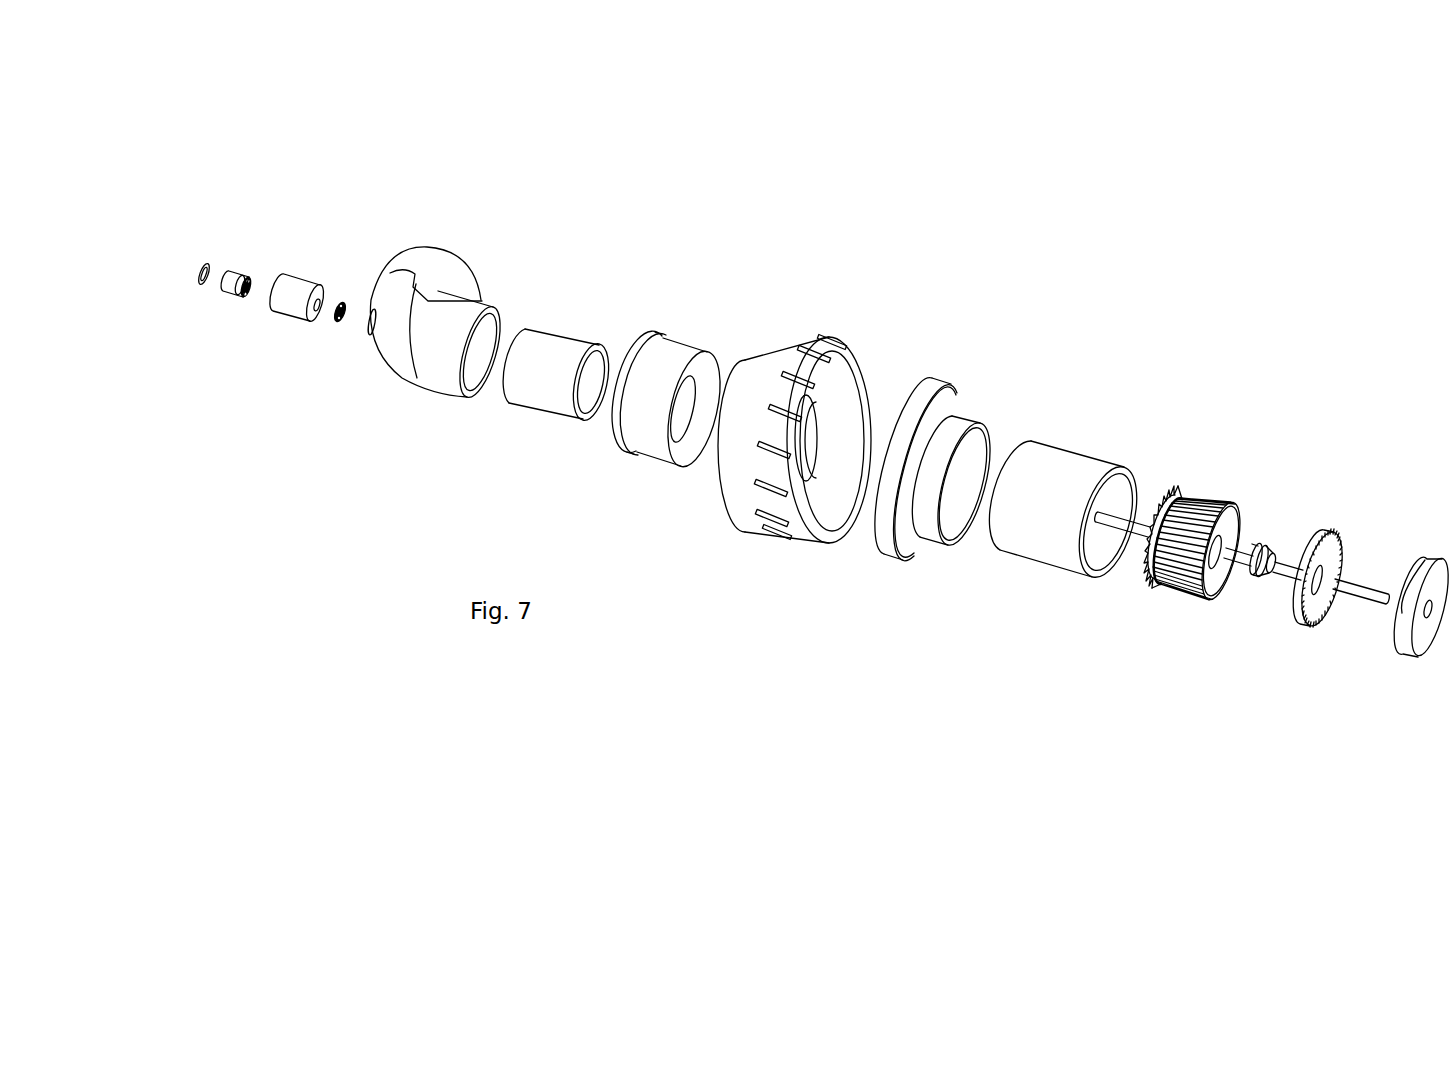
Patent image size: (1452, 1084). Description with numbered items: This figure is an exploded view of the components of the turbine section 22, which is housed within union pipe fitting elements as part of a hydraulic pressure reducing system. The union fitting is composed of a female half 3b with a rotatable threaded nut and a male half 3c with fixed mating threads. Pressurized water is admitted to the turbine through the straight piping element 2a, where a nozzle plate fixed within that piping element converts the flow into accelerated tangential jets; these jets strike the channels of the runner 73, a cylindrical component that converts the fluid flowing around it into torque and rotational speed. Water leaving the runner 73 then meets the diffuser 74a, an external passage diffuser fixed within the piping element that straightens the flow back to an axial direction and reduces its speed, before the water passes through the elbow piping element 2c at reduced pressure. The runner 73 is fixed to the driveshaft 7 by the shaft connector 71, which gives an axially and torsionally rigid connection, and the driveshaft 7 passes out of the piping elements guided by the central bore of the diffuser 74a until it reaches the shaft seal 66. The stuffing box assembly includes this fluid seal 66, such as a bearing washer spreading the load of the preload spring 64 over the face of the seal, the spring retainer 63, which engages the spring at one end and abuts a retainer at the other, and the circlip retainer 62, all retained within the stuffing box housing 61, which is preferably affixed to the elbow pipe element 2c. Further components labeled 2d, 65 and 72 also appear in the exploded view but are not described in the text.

The turbine section 22 is at (1015, 274).
The straight piping element 2a is at (563, 327).
The elbow piping element 2c is at (437, 245).
The flanged ring 2d is at (683, 343).
The female half of union pipe fitting 3b is at (832, 345).
The male half of union pipe fitting 3c is at (942, 380).
The driveshaft 7 is at (1250, 548).
The shaft connector 71 is at (1247, 560).
The end cap 72 is at (1415, 657).
The runner 73 is at (1300, 623).
The diffuser 74a is at (1185, 600).
The stuffing box housing 61 is at (287, 317).
The circlip retainer 62 is at (200, 262).
The spring retainer 63 is at (233, 273).
The preload spring 64 is at (236, 287).
The edge 65 is at (247, 297).
The shaft seal 66 is at (337, 322).